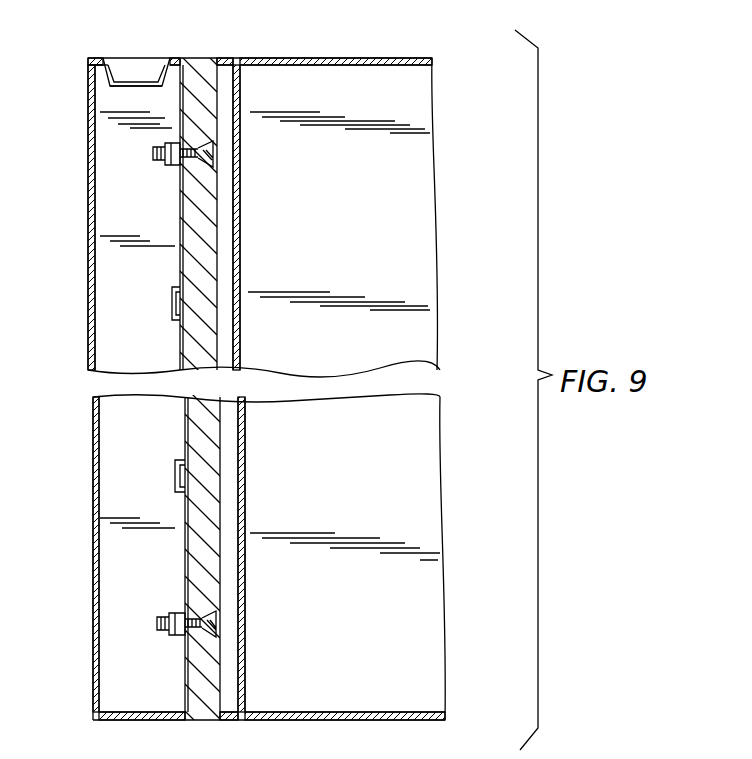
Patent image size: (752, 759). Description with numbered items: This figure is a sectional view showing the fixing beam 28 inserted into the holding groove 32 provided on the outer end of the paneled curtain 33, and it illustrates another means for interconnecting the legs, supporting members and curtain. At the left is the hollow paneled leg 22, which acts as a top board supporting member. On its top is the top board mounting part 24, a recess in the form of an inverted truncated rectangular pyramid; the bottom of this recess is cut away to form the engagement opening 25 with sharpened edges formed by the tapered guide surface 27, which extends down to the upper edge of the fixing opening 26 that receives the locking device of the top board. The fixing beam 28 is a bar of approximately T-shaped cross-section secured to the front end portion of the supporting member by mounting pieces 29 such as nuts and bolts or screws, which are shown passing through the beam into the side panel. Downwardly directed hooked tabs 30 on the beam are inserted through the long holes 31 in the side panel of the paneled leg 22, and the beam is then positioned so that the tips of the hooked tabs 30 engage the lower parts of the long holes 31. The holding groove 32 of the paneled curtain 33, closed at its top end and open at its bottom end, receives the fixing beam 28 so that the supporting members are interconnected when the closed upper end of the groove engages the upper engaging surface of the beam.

The paneled leg 22 is at (90, 206).
The top board mounting part 24 is at (130, 66).
The engagement opening 25 is at (105, 92).
The fixing opening 26 is at (143, 68).
The tapered guide surface 27 is at (92, 75).
The fixing beam 28 is at (208, 325).
The bolt 29 is at (213, 145).
The hooked tab 30 is at (172, 303).
The long hole 31 is at (178, 266).
The holding groove 32 is at (229, 258).
The paneled curtain 33 is at (348, 210).